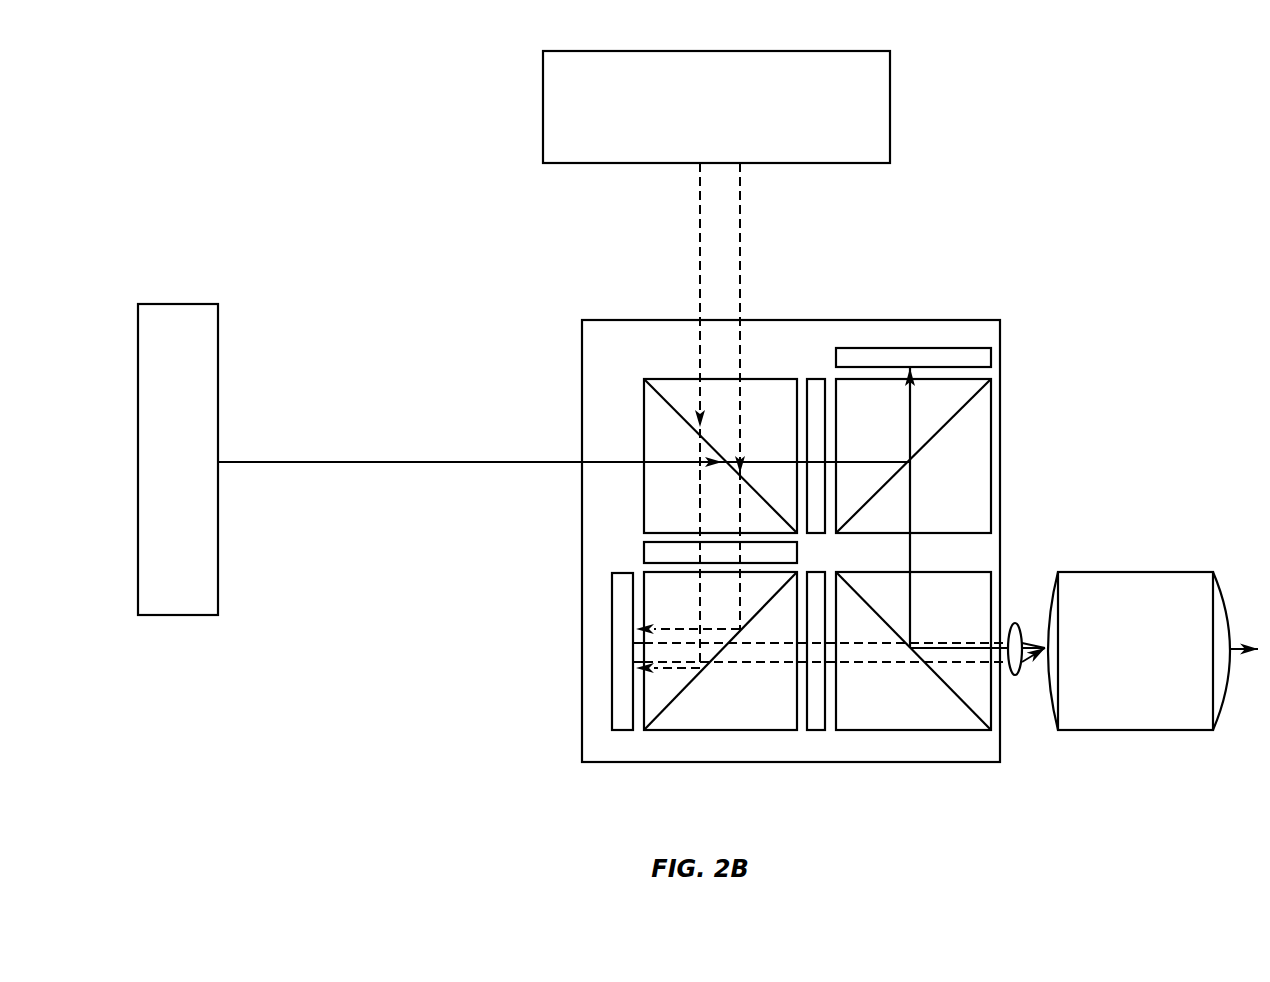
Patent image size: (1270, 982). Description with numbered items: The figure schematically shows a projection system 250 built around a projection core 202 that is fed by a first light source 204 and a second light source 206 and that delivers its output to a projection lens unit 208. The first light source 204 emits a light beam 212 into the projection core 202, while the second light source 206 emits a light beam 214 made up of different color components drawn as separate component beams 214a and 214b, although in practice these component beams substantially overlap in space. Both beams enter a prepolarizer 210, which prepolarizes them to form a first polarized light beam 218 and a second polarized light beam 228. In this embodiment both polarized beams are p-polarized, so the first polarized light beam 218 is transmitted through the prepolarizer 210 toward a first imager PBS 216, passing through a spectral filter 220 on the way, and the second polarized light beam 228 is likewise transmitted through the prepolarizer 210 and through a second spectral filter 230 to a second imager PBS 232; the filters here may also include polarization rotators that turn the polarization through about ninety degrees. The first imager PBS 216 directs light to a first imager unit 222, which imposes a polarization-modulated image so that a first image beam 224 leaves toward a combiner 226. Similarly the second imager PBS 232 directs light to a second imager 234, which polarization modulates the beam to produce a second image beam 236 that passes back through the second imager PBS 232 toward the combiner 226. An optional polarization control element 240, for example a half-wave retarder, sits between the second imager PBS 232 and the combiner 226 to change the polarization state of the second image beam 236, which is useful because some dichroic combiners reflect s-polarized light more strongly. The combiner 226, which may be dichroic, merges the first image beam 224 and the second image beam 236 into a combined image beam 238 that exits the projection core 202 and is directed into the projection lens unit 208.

The projection system 250 is at (272, 86).
The second light source 206 is at (543, 144).
The first light source 204 is at (218, 373).
The light beam 212 is at (350, 462).
The projection core 202 is at (1000, 340).
The prepolarizer 210 is at (641, 416).
The spectral filter 220 is at (817, 378).
The first imager PBS 216 is at (991, 410).
The first imager unit 222 is at (927, 348).
The first image beam 224 is at (913, 492).
The second spectral filter 230 is at (644, 550).
The second imager 234 is at (612, 686).
The second imager PBS 232 is at (694, 718).
The polarization control element 240 is at (816, 731).
The combiner 226 is at (892, 731).
The light beam 214 is at (740, 190).
The component beam 214a is at (700, 257).
The component beam 214b is at (742, 218).
The first polarized light beam 218 is at (758, 460).
The second polarized light beam 228 is at (700, 508).
The second image beam 236 is at (780, 663).
The combined image beam 238 is at (1015, 676).
The projection lens unit 208 is at (1133, 572).